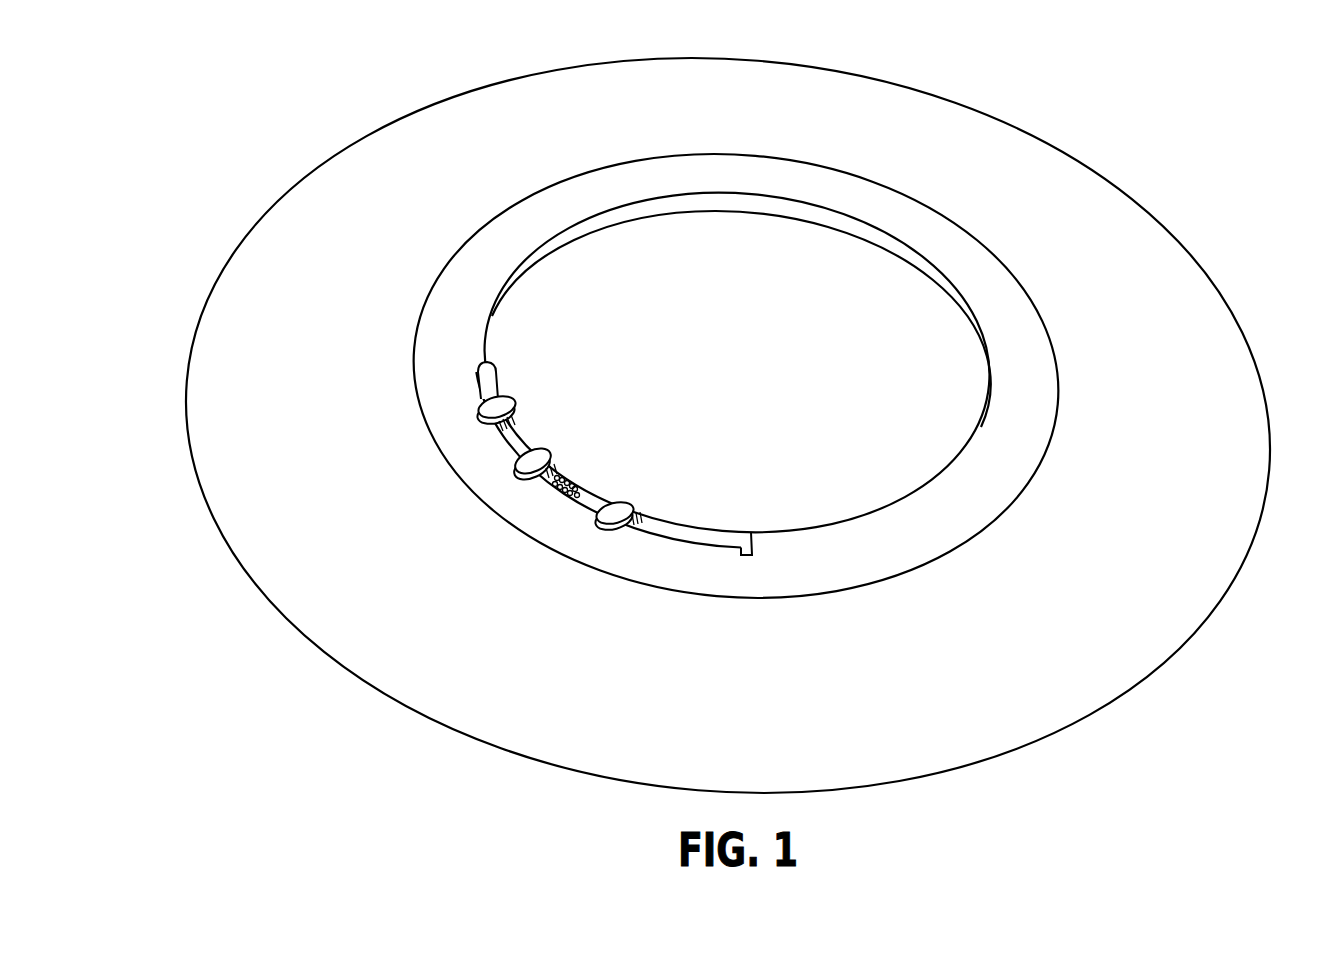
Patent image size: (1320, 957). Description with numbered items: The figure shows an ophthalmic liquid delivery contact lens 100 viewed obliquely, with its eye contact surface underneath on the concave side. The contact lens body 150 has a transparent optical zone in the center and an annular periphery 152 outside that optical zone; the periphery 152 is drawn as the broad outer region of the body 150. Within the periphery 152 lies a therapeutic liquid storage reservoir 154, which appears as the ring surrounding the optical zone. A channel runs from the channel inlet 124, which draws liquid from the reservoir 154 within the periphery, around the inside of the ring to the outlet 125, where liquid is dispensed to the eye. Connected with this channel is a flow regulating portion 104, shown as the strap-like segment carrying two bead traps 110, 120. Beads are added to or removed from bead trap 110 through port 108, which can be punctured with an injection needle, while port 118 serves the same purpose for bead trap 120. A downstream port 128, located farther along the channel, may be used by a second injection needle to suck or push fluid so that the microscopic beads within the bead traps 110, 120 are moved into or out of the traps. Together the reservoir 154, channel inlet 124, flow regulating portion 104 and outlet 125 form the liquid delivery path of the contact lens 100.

The ophthalmic liquid delivery contact lens 100 is at (227, 103).
The contact lens body 150 is at (360, 138).
The annular periphery 152 is at (323, 309).
The therapeutic liquid storage reservoir 154 is at (885, 554).
The flow regulating portion 104 is at (488, 386).
The channel inlet 124 is at (743, 557).
The outlet 125 is at (489, 371).
The downstream port 128 is at (512, 397).
The bead trap 120 is at (556, 453).
The port 118 is at (557, 441).
The bead trap 110 is at (641, 497).
The port 108 is at (633, 497).